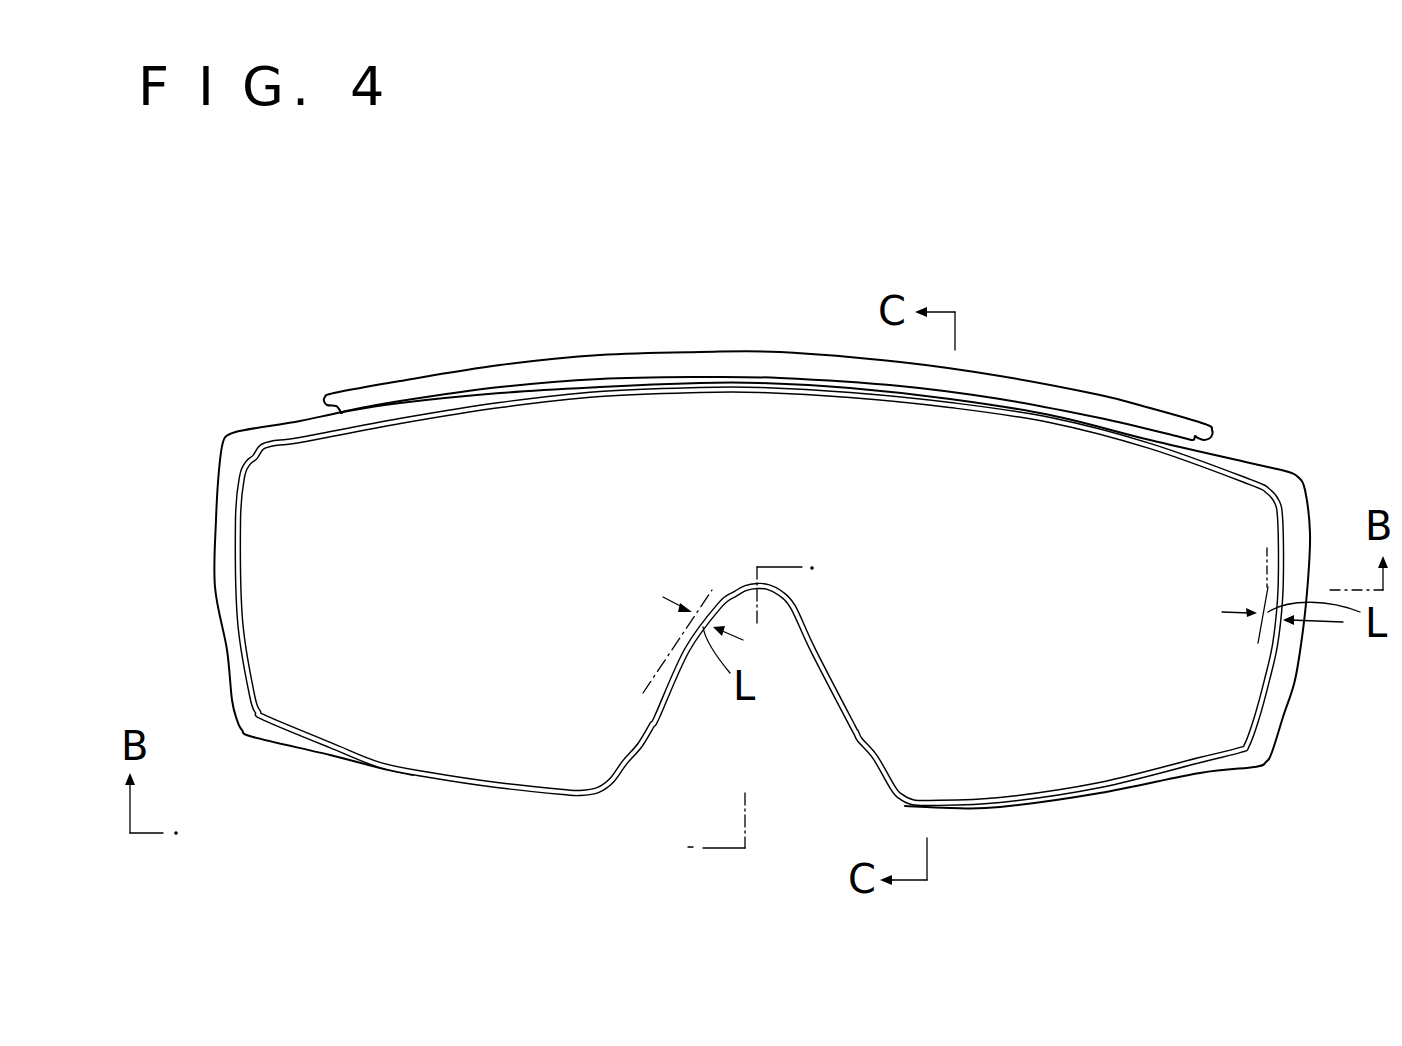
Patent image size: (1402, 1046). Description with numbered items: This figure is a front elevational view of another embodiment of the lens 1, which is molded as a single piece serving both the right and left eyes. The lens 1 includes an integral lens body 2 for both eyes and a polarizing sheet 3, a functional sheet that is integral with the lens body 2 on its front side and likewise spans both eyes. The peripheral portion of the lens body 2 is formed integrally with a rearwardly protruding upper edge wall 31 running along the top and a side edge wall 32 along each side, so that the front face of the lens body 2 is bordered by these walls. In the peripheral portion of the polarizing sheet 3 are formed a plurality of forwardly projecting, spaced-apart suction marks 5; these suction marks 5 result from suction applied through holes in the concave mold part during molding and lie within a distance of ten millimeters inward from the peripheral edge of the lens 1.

The lens 1 is at (1145, 381).
The lens body 2 is at (238, 635).
The polarizing sheet 3 is at (315, 463).
The upper edge wall 31 is at (678, 362).
The side edge wall 32 is at (223, 580).
The suction marks 5 is at (767, 397).